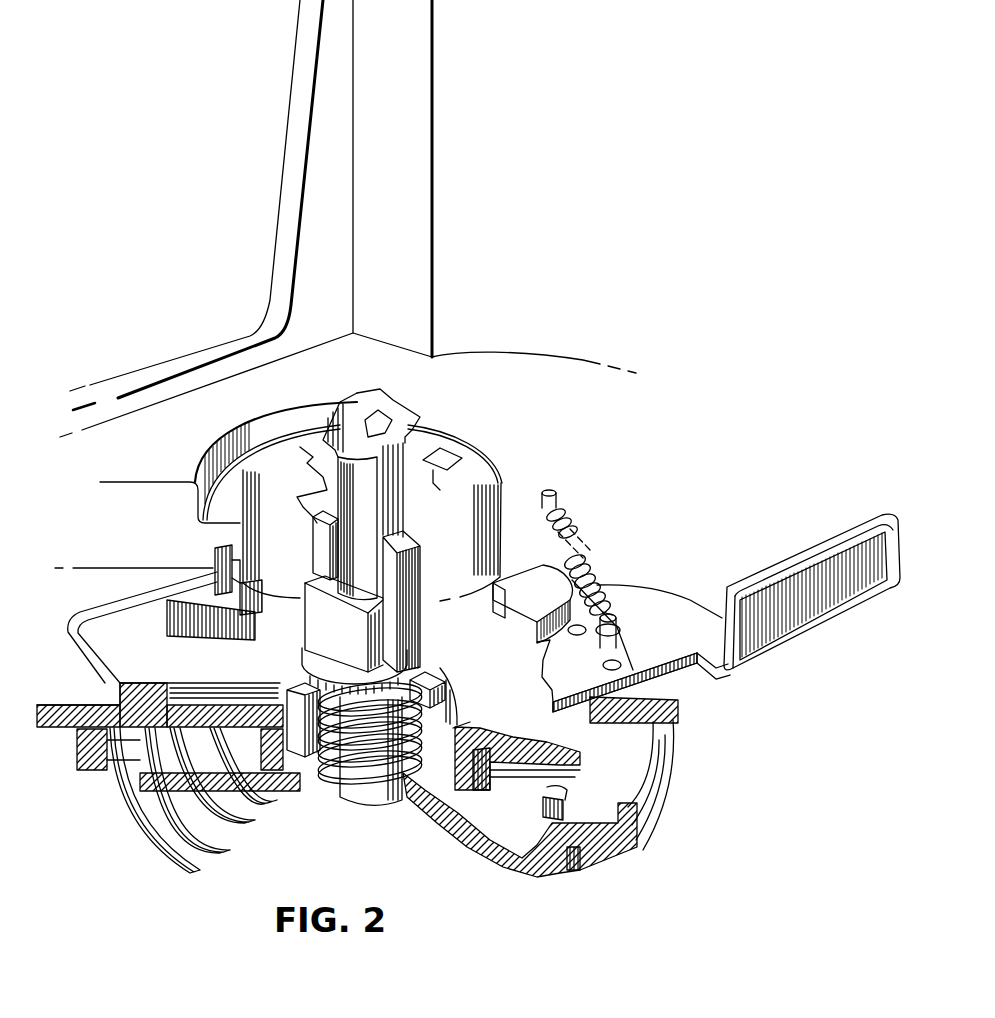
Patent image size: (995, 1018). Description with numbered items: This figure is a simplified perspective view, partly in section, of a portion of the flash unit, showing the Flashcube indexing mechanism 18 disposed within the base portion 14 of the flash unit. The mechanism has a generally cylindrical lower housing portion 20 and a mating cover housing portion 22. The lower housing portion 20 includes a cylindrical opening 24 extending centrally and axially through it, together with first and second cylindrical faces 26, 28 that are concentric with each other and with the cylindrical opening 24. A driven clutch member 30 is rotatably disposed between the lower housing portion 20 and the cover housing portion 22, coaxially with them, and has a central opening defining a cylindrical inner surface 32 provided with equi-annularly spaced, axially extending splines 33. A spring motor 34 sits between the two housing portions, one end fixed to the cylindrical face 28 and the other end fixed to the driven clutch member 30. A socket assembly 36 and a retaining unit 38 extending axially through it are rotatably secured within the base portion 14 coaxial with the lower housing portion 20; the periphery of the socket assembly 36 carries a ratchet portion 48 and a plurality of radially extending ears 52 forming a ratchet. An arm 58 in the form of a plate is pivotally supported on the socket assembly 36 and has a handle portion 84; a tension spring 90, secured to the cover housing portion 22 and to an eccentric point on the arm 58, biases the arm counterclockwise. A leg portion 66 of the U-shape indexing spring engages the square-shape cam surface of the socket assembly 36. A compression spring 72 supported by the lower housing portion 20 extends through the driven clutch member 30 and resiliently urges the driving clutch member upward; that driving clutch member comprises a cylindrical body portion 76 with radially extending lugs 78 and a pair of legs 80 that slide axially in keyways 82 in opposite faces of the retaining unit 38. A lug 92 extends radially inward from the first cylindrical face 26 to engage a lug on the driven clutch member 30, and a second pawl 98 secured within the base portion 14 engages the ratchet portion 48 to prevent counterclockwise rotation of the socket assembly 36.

The base portion 14 is at (467, 360).
The Flashcube indexing mechanism 18 is at (572, 926).
The lower housing portion 20 is at (513, 857).
The cover housing portion 22 is at (90, 707).
The cylindrical opening 24 is at (393, 803).
The first cylindrical face 26 is at (550, 867).
The second cylindrical face 28 is at (620, 827).
The driven clutch member 30 is at (483, 775).
The cylindrical inner surface 32 is at (283, 792).
The splines 33 is at (292, 783).
The spring motor 34 is at (140, 833).
The socket assembly 36 is at (478, 463).
The retaining unit 38 is at (310, 630).
The ratchet portion 48 is at (215, 600).
The ears 52 is at (167, 608).
The arm 58 is at (568, 669).
The leg portion 66 is at (140, 593).
The compression spring 72 is at (353, 777).
The cylindrical body portion 76 is at (430, 718).
The lugs 78 is at (440, 673).
The legs 80 is at (305, 497).
The keyways 82 is at (320, 572).
The handle portion 84 is at (836, 565).
The tension spring 90 is at (590, 563).
The lug 92 is at (543, 810).
The second pawl 98 is at (537, 562).